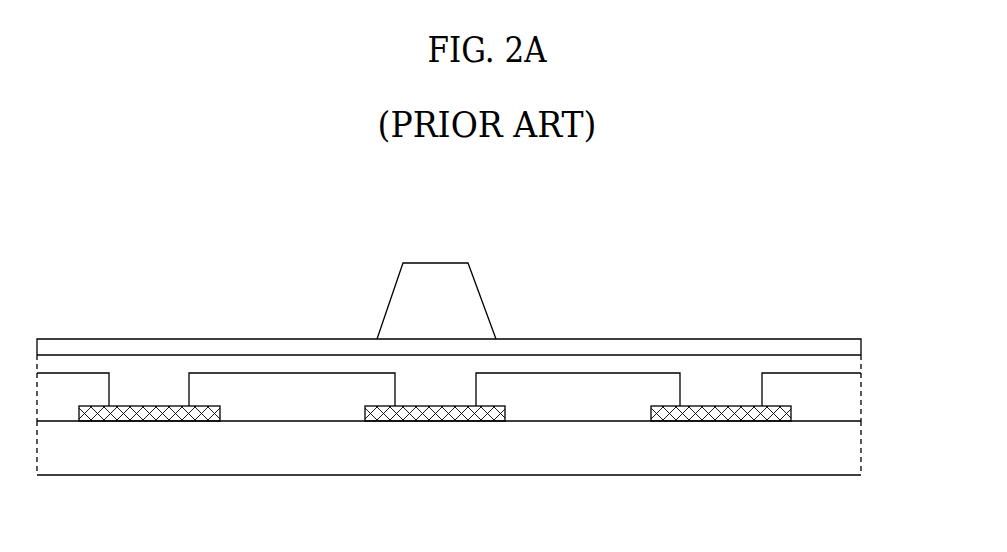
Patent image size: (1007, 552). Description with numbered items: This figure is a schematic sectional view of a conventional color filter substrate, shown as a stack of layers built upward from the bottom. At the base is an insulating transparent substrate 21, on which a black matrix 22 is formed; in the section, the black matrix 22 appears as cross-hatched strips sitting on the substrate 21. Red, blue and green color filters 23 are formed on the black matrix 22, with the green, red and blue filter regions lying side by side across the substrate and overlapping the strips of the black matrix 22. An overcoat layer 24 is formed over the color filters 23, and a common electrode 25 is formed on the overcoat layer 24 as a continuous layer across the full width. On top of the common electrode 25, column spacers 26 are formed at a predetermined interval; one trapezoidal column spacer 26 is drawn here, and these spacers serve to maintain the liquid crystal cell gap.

The insulating transparent substrate 21 is at (855, 449).
The black matrix 22 is at (725, 423).
The color filters 23 is at (855, 402).
The overcoat layer 24 is at (855, 365).
The common electrode 25 is at (743, 347).
The column spacers 26 is at (436, 275).